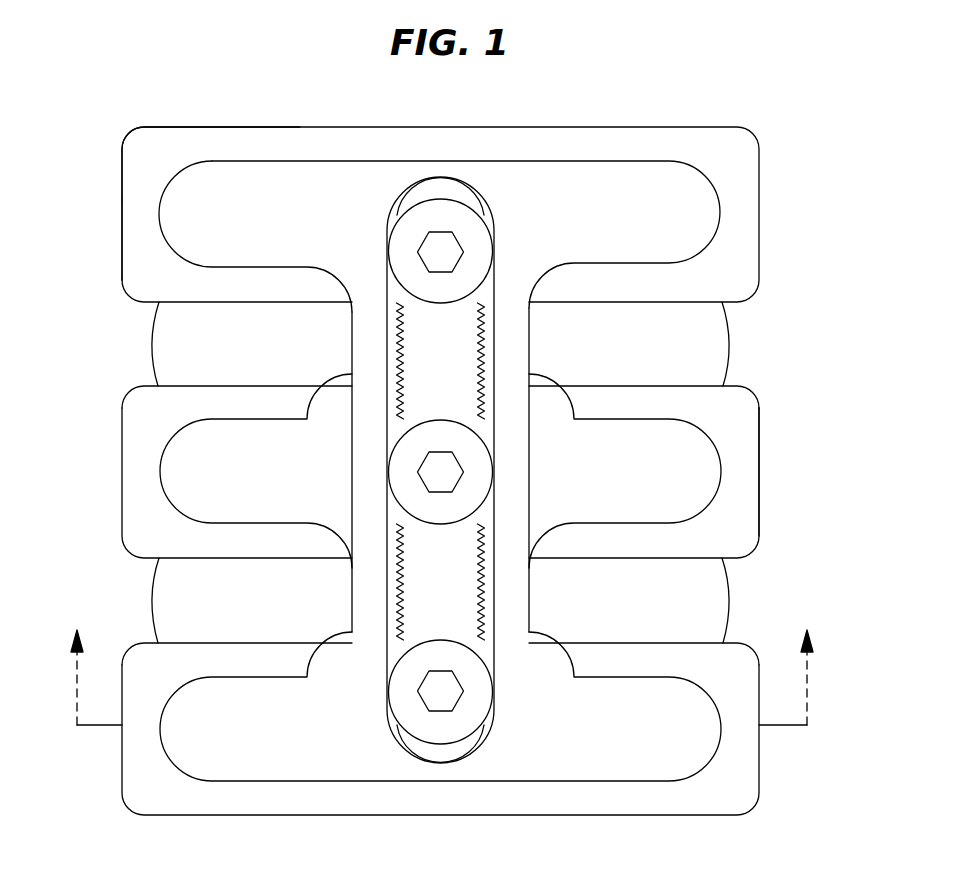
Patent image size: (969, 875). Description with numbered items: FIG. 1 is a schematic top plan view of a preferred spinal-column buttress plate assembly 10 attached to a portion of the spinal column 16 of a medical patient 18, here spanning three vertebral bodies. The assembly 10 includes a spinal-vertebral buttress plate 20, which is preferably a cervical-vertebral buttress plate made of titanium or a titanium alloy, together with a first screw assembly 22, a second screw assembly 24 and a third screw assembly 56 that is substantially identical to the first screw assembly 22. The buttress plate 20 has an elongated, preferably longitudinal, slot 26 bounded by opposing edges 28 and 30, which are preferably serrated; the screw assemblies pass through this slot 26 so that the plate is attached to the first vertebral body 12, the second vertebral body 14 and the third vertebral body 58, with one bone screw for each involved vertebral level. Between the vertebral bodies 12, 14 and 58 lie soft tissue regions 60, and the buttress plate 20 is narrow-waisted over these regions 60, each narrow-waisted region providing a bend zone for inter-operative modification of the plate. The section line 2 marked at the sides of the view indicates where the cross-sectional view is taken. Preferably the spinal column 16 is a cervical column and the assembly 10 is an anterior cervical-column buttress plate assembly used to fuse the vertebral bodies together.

The spinal-column buttress plate assembly 10 is at (597, 158).
The first vertebral body 12 is at (740, 770).
The second vertebral body 14 is at (742, 425).
The spinal column 16 is at (119, 252).
The medical patient 18 is at (212, 101).
The spinal-vertebral buttress plate 20 is at (623, 751).
The first screw assembly 22 is at (400, 695).
The second screw assembly 24 is at (405, 462).
The elongated slot 26 is at (425, 350).
The opposing edge 28 is at (478, 553).
The opposing edge 30 is at (408, 597).
The third screw assembly 56 is at (407, 220).
The third vertebral body 58 is at (742, 165).
The soft tissue region 60 is at (705, 345).
The section line 2- 2 is at (442, 663).